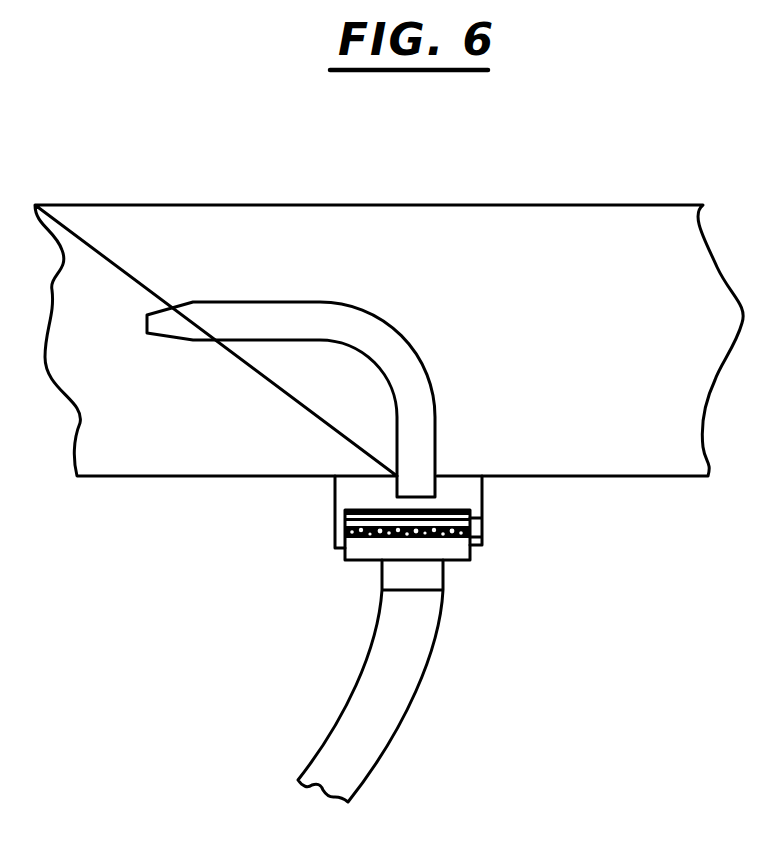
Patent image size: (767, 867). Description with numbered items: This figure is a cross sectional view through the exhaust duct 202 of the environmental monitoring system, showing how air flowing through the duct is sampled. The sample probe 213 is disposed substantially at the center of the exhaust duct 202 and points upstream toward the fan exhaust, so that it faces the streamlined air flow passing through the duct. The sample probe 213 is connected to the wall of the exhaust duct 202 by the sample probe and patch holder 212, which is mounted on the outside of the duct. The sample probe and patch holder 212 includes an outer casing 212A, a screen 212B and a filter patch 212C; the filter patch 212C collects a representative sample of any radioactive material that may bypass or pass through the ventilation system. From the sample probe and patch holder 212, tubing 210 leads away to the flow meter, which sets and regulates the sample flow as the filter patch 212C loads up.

The exhaust duct 202 is at (100, 205).
The sample probe 213 is at (288, 302).
The sample probe and patch holder 212 is at (404, 555).
The outer casing 212A is at (335, 503).
The screen 212B is at (482, 532).
The filter patch 212C is at (482, 520).
The tubing 210 is at (426, 674).